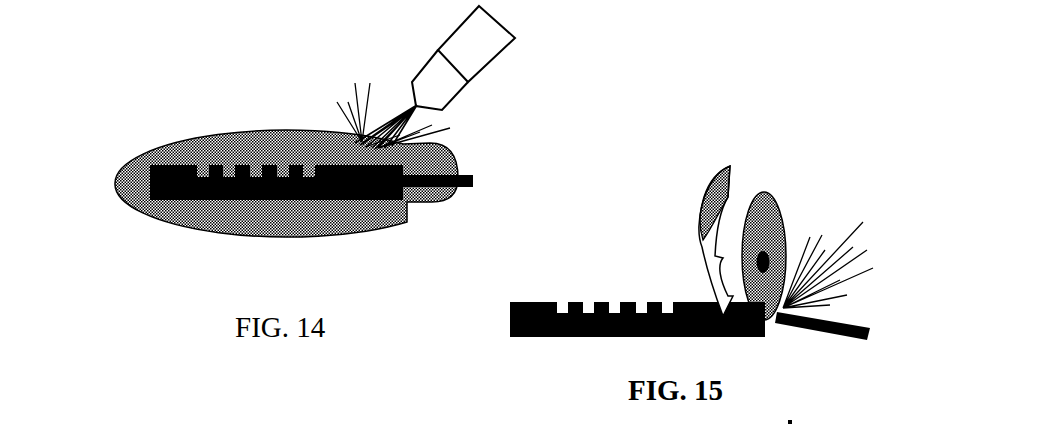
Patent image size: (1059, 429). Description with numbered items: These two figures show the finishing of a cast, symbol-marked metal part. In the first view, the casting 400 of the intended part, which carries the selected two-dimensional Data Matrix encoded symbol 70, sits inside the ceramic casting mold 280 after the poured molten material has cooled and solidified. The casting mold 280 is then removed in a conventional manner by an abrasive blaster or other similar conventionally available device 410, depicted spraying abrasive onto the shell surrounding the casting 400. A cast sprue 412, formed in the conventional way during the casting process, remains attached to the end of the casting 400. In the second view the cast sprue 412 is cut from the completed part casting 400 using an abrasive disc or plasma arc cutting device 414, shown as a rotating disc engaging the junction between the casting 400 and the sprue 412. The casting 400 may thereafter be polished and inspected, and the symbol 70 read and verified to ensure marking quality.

In FIG. 14, the casting mold 280 is at (260, 133).
In FIG. 14, the casting 400 is at (137, 166).
In FIG. 15, the casting 400 is at (512, 337).
In FIG. 14, the abrasive blaster 410 is at (473, 116).
In FIG. 14, the cast sprue 412 is at (473, 181).
In FIG. 15, the cast sprue 412 is at (846, 349).
In FIG. 15, the 2D Data Matrix encoded symbol 70 is at (558, 291).
In FIG. 15, the abrasive disc or plasma arc cutting device 414 is at (801, 221).